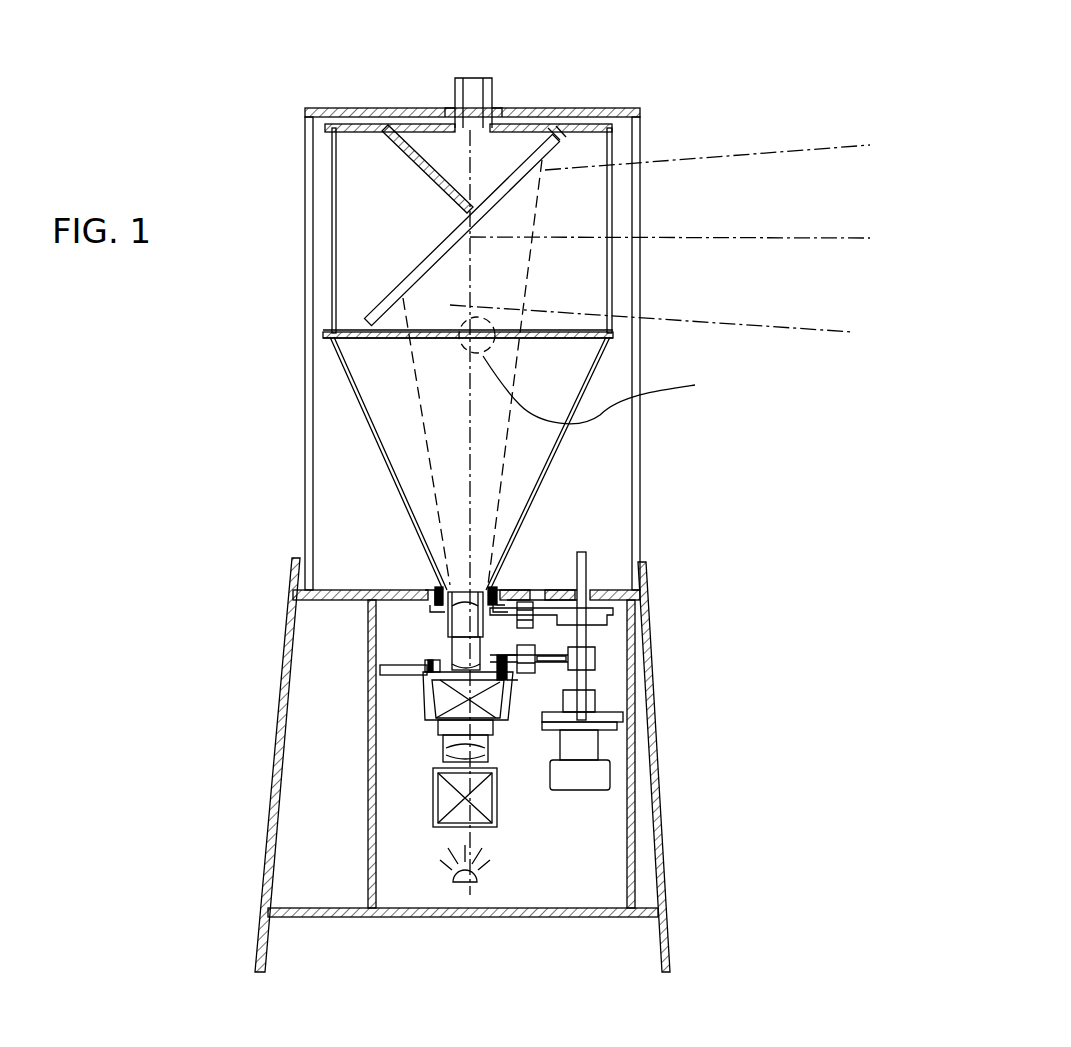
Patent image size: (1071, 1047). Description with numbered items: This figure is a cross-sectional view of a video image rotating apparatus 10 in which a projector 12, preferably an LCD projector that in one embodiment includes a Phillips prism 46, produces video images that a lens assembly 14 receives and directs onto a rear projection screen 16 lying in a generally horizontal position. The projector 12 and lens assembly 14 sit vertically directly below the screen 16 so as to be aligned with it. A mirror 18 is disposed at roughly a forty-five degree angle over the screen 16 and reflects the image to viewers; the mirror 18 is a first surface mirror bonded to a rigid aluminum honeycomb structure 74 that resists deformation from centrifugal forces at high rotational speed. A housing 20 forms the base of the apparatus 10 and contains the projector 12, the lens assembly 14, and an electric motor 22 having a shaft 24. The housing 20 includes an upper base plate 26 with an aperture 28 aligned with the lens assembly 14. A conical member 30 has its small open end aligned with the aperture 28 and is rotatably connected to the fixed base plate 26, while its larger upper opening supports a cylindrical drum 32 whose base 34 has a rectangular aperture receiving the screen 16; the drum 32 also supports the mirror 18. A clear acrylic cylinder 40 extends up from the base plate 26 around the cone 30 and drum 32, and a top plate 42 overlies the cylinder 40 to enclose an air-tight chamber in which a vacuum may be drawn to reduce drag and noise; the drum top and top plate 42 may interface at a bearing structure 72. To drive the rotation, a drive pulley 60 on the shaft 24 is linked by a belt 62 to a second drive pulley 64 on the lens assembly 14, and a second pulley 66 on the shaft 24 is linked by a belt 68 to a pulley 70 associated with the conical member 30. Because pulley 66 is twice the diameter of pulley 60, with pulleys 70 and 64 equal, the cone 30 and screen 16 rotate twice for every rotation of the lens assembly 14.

The video image rotating apparatus 10 is at (232, 158).
The projector 12 is at (452, 895).
The lens assembly 14 is at (421, 735).
The rear projection screen 16 is at (416, 352).
The mirror 18 is at (548, 142).
The housing 20 is at (635, 862).
The electric motor 22 is at (587, 778).
The shaft 24 is at (586, 556).
The upper base plate 26 is at (435, 605).
The aperture 28 is at (548, 590).
The conical member 30 is at (400, 494).
The cylindrical drum 32 is at (333, 275).
The base 34 is at (573, 340).
The clear acrylic cylinder 40 is at (305, 404).
The top plate 42 is at (332, 108).
The Phillips prism 46 is at (497, 818).
The drive pulley 60 is at (596, 655).
The belt 62 is at (552, 668).
The second drive pulley 64 is at (452, 657).
The second drive pulley 66 is at (610, 617).
The belt 68 is at (548, 604).
The pulley 70 is at (395, 598).
The bearing structure 72 is at (455, 80).
The honeycomb structure 74 is at (464, 212).